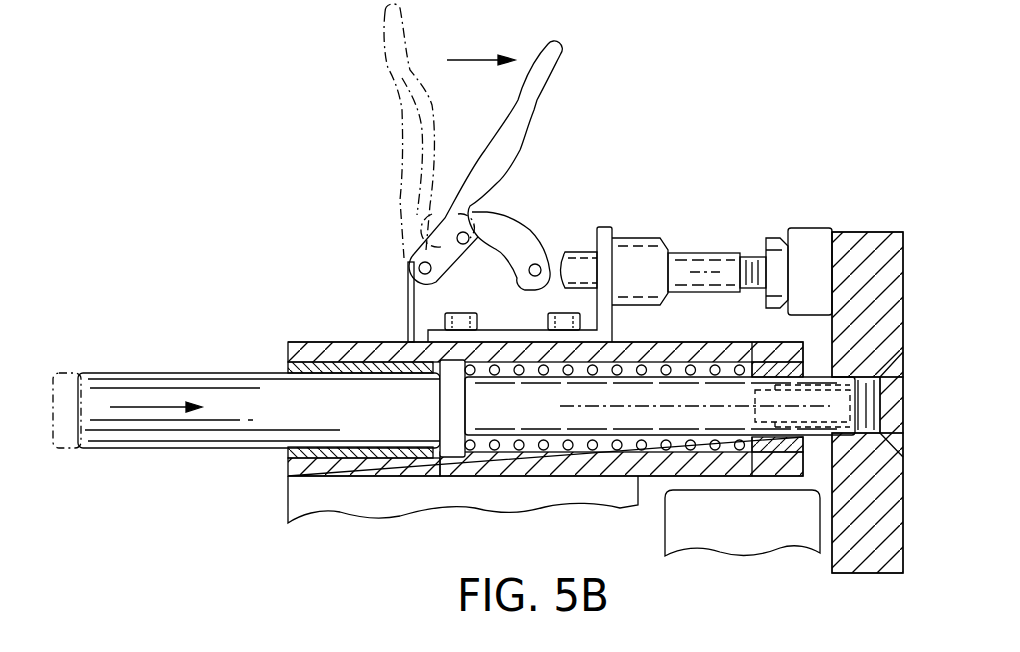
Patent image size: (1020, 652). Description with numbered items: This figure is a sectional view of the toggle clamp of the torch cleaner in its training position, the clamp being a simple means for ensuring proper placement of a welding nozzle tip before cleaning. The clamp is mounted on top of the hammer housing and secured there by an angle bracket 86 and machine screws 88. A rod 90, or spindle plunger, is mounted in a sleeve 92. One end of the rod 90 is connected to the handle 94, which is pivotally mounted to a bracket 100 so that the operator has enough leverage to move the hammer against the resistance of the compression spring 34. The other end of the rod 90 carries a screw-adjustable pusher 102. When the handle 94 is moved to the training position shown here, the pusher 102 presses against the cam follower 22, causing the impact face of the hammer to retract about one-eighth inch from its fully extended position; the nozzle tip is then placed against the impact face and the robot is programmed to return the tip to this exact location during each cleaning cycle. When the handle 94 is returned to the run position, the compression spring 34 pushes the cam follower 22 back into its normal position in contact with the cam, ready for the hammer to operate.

The cam follower 22 is at (871, 232).
The compression spring 34 is at (690, 451).
The angle bracket 86 is at (600, 226).
The machine screws 88 is at (561, 313).
The rod 90 is at (707, 253).
The sleeve 92 is at (639, 238).
The handle 94 is at (531, 126).
The bracket 100 is at (407, 302).
The screw-adjustable pusher 102 is at (806, 228).